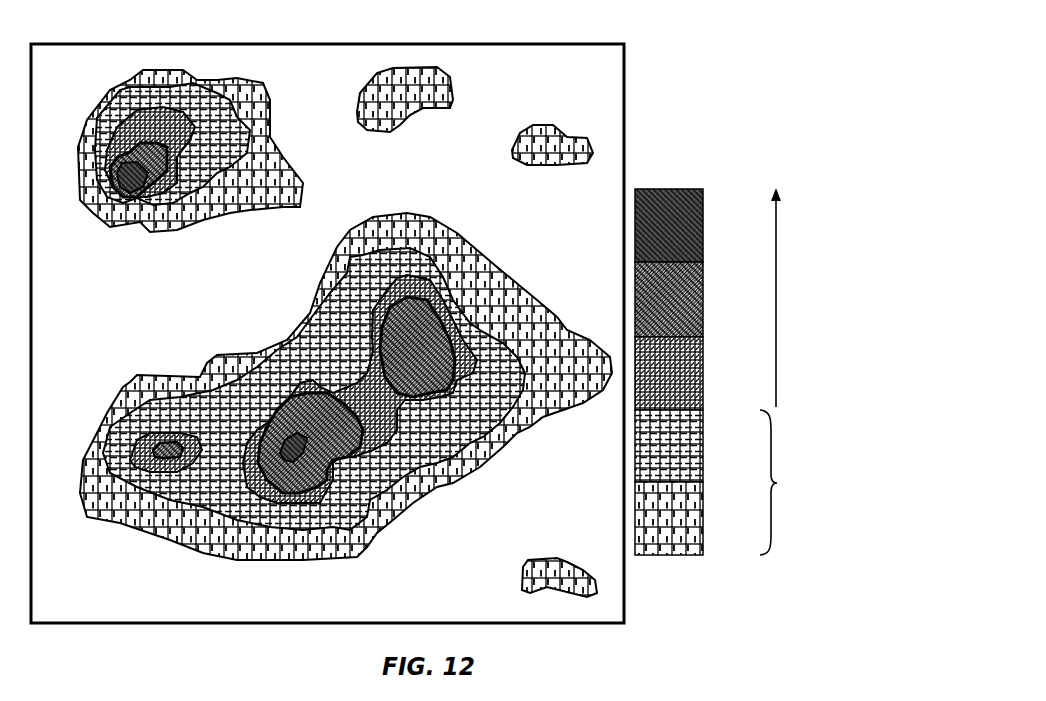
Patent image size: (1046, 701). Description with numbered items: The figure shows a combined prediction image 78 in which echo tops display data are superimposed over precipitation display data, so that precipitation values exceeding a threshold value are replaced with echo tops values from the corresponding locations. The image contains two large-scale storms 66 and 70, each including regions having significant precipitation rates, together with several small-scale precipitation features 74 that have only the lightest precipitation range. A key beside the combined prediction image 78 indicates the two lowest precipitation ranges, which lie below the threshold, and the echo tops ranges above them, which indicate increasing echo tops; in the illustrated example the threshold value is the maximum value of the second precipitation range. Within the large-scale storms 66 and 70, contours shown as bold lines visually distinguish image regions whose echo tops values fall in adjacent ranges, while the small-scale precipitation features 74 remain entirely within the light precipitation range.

The large-scale storm 66 is at (448, 540).
The large-scale storm 70 is at (188, 248).
The small-scale precipitation features 74 is at (408, 114).
The combined prediction image 78 is at (676, 107).